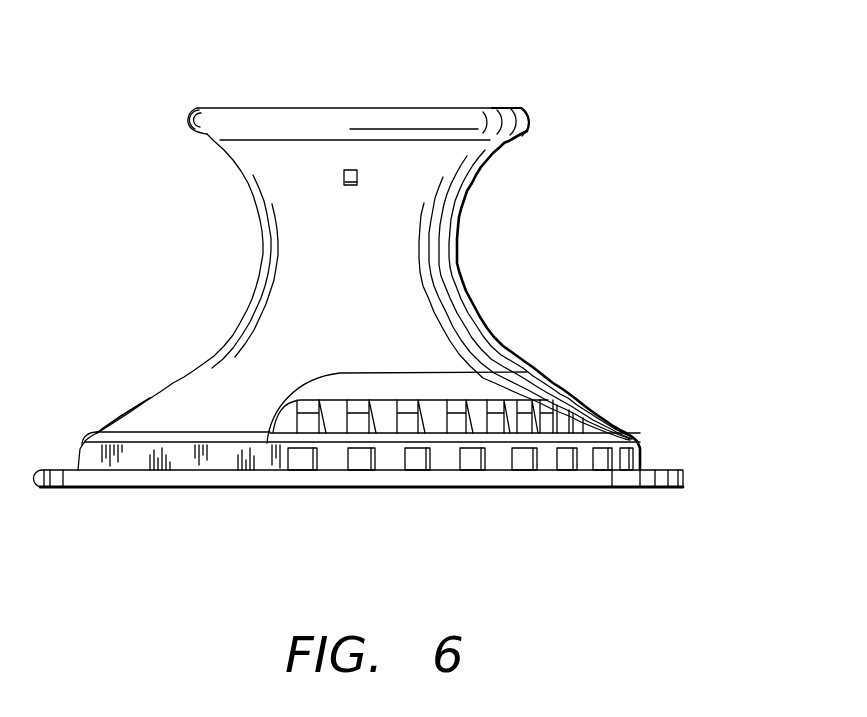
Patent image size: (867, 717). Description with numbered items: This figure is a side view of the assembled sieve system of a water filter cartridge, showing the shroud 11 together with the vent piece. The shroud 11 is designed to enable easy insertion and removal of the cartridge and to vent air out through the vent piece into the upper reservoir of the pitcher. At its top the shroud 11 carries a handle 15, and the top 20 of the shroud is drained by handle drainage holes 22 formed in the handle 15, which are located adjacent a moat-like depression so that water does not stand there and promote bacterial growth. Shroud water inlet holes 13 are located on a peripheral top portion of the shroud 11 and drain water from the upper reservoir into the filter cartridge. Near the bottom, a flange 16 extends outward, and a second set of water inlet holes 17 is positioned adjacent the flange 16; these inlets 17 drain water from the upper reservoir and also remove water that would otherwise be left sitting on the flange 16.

The top of the shroud 20 is at (151, 88).
The handle drainage holes 22 is at (358, 176).
The handle 15 is at (506, 146).
The shroud 11 is at (405, 262).
The shroud water inlet holes 13 is at (592, 412).
The second set of water inlet holes 17 is at (625, 457).
The flange 16 is at (683, 475).